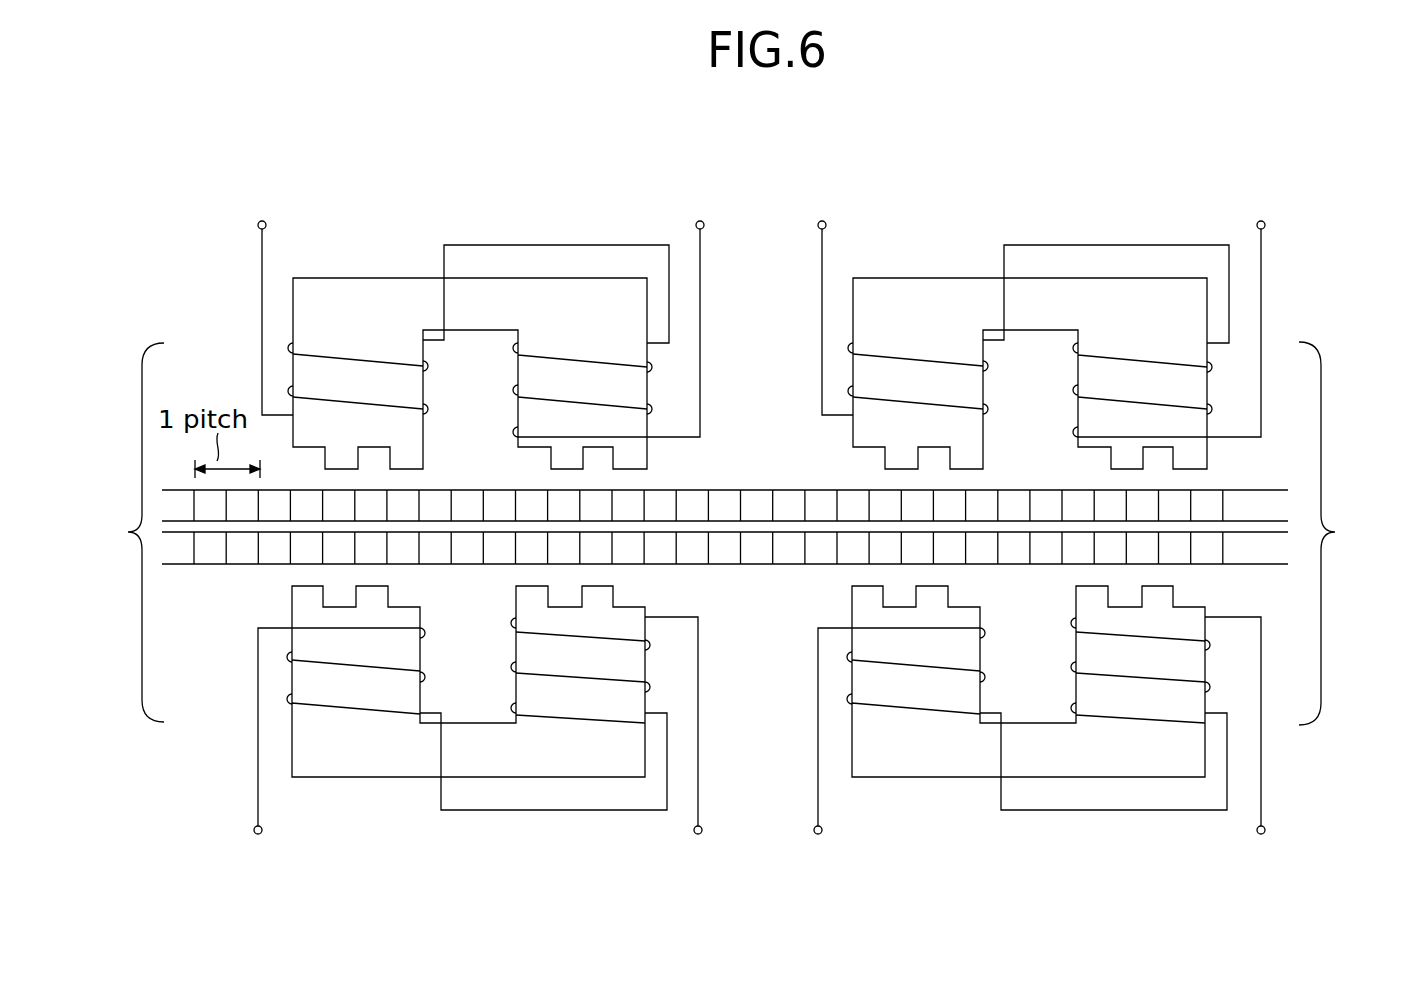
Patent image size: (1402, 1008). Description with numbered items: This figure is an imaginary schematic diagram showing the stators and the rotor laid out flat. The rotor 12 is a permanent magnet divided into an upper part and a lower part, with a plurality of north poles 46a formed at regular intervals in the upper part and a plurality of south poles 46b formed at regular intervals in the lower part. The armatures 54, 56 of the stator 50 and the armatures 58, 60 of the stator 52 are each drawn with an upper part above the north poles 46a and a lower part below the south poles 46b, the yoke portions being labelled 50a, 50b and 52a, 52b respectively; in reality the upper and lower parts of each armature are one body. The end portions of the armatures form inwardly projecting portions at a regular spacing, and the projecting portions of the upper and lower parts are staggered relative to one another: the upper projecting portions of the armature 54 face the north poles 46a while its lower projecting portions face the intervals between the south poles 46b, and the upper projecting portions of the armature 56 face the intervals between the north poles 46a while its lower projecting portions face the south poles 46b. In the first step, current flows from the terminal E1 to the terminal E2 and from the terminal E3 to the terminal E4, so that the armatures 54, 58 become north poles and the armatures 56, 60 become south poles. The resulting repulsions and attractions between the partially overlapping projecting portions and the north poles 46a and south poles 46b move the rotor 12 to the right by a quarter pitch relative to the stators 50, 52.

The rotor 12 is at (782, 585).
The north poles 46a is at (728, 488).
The south poles 46b is at (723, 567).
The stator 50 is at (121, 532).
The stator 52 is at (1343, 533).
The upper yoke of first stator unit 50a is at (403, 298).
The lower yoke of first stator unit 50b is at (420, 767).
The upper yoke of second stator unit 52a is at (1041, 339).
The lower yoke of second stator unit 52b is at (1039, 724).
The armature 54 is at (347, 415).
The armature 56 is at (572, 408).
The armature 58 is at (917, 539).
The armature 60 is at (1141, 526).
The E1 terminal E1 is at (329, 528).
The E2 terminal E2 is at (614, 528).
The E3 terminal E3 is at (889, 528).
The E4 terminal E4 is at (1175, 528).